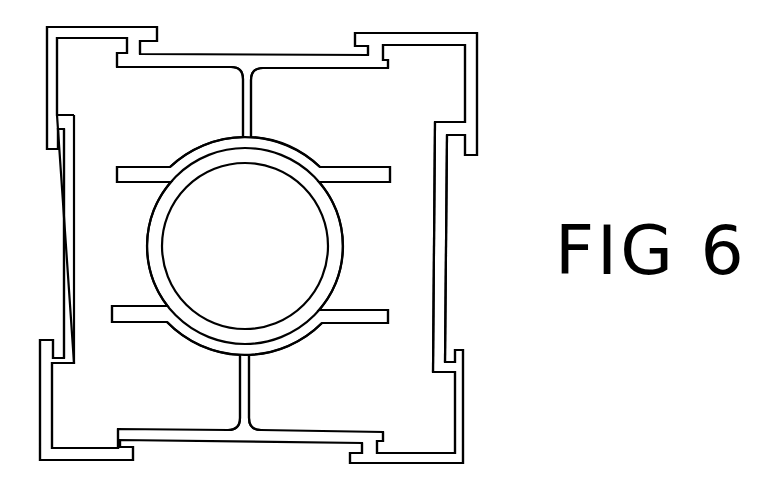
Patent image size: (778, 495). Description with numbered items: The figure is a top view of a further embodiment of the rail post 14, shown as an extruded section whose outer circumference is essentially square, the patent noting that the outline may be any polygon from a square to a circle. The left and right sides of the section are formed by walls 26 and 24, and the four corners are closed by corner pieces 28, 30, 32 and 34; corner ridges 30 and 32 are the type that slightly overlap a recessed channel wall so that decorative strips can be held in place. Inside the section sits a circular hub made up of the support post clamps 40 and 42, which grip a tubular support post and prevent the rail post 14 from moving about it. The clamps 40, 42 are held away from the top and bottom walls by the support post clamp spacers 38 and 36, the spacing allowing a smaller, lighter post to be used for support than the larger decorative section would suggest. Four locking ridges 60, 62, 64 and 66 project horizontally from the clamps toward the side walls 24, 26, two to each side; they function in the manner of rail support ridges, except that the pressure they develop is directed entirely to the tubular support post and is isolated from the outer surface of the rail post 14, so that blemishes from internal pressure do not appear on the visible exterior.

The rail post 14 is at (491, 154).
The right side wall 24 is at (446, 227).
The left side wall 26 is at (76, 227).
The upper right corner member 28 is at (467, 85).
The corner ridge 30 is at (397, 464).
The corner ridge 32 is at (84, 461).
The upper left corner member 34 is at (57, 68).
The support post clamp spacer 36 is at (249, 383).
The support post clamp spacer 38 is at (251, 105).
The support post clamp 40 is at (225, 140).
The support post clamp 42 is at (208, 351).
The locking ridge 60 is at (357, 146).
The locking ridge 62 is at (363, 323).
The locking ridge 64 is at (148, 287).
The locking ridge 66 is at (152, 143).